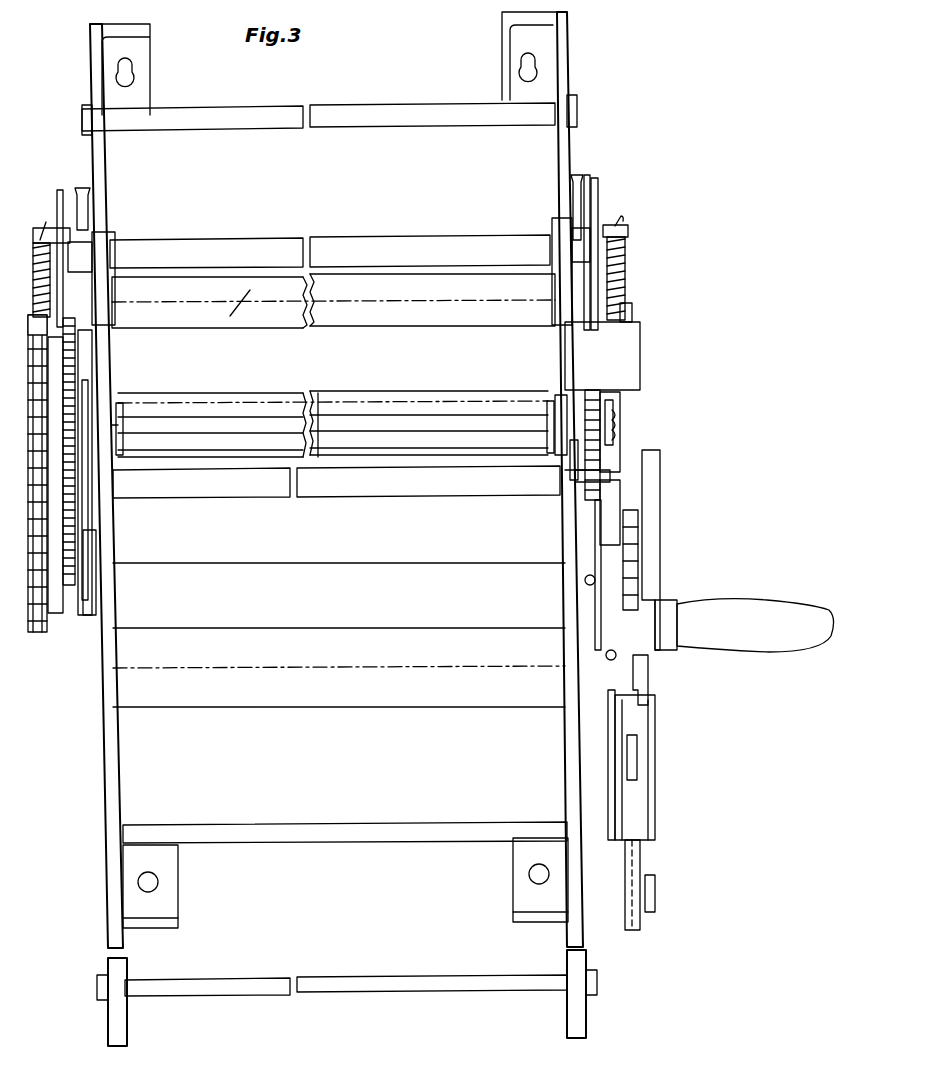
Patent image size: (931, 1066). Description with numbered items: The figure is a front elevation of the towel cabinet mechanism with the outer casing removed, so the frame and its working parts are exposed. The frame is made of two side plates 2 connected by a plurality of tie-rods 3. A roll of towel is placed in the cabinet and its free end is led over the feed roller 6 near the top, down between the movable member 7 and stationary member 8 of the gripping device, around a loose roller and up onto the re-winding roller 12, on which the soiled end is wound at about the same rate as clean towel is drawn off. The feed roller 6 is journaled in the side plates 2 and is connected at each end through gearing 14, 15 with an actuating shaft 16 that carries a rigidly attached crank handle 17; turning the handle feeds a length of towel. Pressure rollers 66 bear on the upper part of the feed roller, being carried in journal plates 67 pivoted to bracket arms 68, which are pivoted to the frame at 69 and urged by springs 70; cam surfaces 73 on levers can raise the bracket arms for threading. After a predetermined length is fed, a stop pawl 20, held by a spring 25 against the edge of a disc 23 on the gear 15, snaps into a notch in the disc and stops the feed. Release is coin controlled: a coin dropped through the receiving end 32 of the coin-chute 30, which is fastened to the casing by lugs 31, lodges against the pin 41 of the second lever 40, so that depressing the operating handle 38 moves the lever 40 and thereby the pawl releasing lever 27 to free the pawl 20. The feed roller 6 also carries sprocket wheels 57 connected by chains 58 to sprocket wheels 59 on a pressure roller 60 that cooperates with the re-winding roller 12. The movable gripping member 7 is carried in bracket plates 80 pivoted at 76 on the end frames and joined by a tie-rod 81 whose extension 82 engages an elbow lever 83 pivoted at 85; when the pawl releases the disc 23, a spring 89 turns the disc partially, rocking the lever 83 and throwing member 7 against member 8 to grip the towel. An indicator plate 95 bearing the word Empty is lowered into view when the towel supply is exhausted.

The side plate 2 is at (98, 155).
The tie-rod 3 is at (392, 110).
The feed roller 6 is at (54, 370).
The movable gripping member 7 is at (393, 420).
The stationary gripping member 8 is at (333, 319).
The re-winding roller 12 is at (358, 700).
The feed gear 14 is at (92, 352).
The feed gear 15 is at (96, 546).
The actuating shaft 16 is at (272, 488).
The crank handle 17 is at (660, 548).
The stop pawl 20 is at (622, 522).
The disc 23 is at (612, 478).
The spring 25 is at (592, 575).
The pawl releasing lever 27 is at (608, 628).
The coin-chute 30 is at (655, 828).
The fastening lug 31 is at (655, 892).
The receiving end of coin-chute 32 is at (637, 757).
The operating handle 38 is at (645, 678).
The second lever 40 is at (610, 778).
The pin 41 is at (626, 860).
The sprocket wheel 57 is at (45, 322).
The chain 58 is at (70, 510).
The sprocket wheel 59 is at (42, 615).
The pressure roller 60 is at (388, 580).
The pressure roller 66 is at (252, 308).
The journal plate 67 is at (100, 270).
The bracket arm 68 is at (588, 180).
The bracket arm pivot 69 is at (80, 202).
The spring 70 is at (50, 257).
The cam surface 73 is at (57, 218).
The bracket plate pivot 76 is at (123, 438).
The bracket plate 80 is at (122, 420).
The tie-rod 81 is at (320, 440).
The tie-rod extension 82 is at (615, 420).
The elbow lever 83 is at (572, 474).
The elbow lever pivot 85 is at (570, 500).
The spring 89 is at (620, 430).
The indicator plate 95 is at (630, 355).